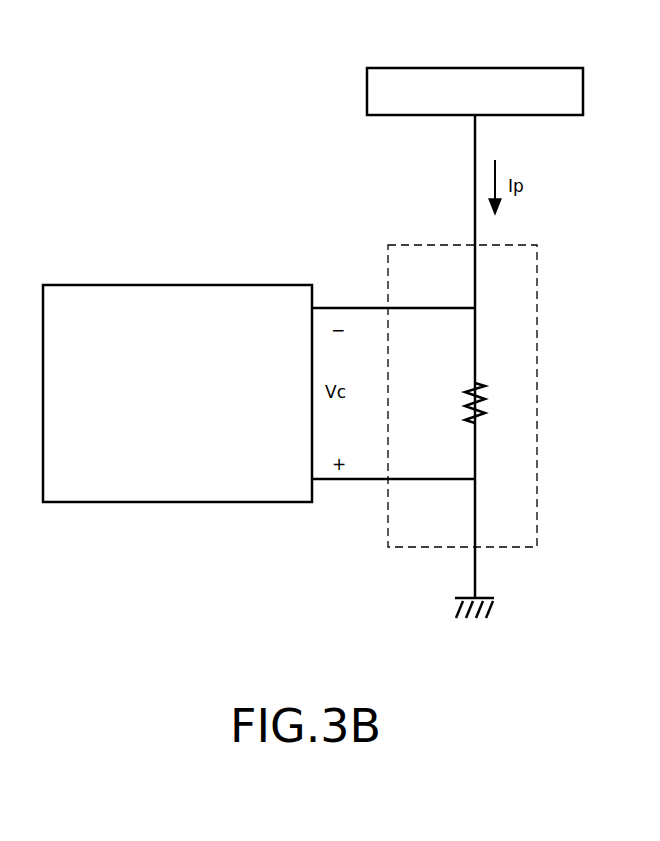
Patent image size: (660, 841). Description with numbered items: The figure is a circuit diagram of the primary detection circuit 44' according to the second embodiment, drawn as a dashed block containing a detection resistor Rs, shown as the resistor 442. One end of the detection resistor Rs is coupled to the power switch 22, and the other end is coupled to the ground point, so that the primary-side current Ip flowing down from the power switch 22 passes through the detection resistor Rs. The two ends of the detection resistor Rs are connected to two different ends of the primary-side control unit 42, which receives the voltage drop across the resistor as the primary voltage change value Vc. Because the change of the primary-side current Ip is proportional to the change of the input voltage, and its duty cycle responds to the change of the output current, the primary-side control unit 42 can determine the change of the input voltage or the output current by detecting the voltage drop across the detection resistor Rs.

The power switch 22 is at (571, 76).
The primary-side control unit 42 is at (113, 303).
The primary detection circuit 44' is at (503, 396).
The resistor 442 is at (490, 411).